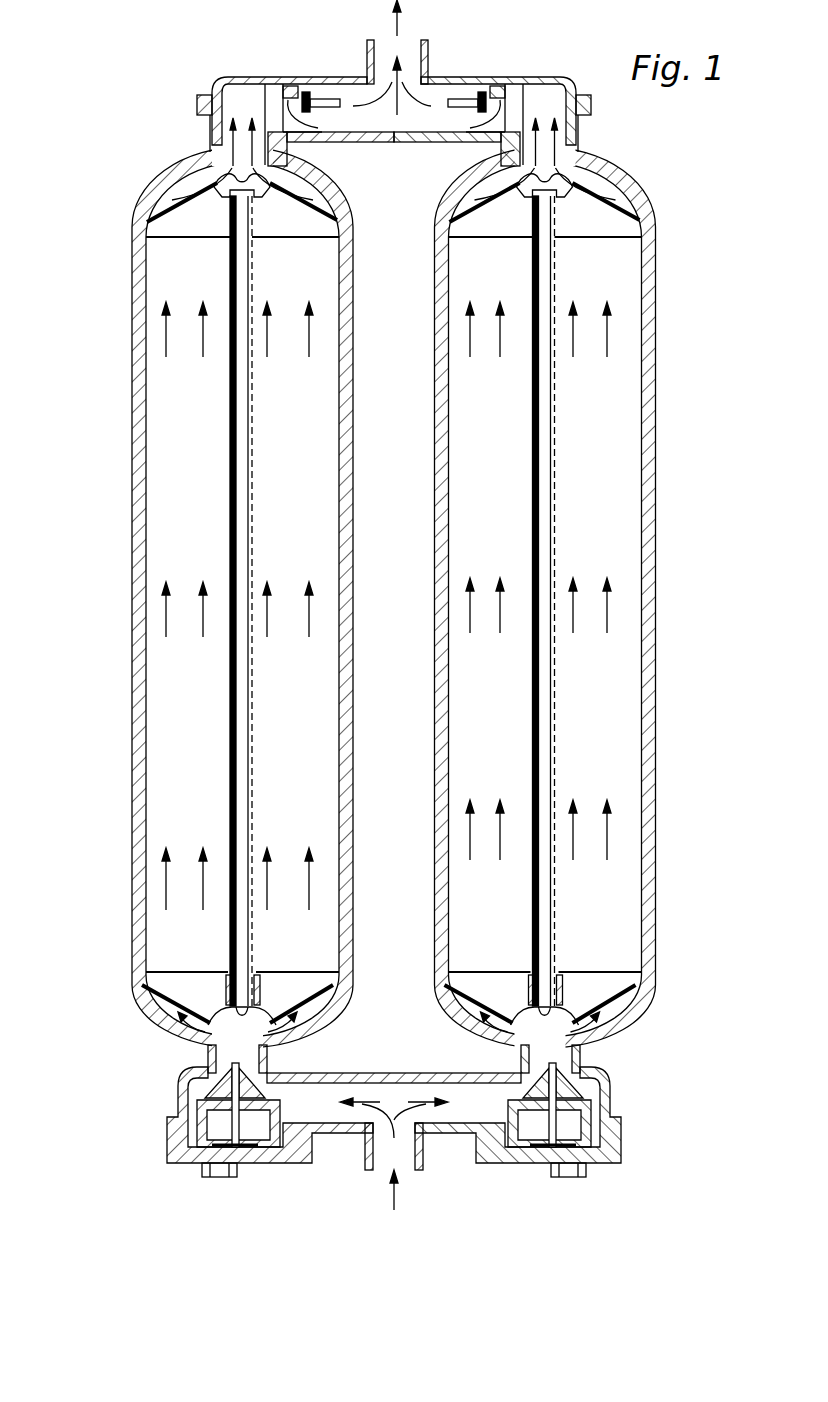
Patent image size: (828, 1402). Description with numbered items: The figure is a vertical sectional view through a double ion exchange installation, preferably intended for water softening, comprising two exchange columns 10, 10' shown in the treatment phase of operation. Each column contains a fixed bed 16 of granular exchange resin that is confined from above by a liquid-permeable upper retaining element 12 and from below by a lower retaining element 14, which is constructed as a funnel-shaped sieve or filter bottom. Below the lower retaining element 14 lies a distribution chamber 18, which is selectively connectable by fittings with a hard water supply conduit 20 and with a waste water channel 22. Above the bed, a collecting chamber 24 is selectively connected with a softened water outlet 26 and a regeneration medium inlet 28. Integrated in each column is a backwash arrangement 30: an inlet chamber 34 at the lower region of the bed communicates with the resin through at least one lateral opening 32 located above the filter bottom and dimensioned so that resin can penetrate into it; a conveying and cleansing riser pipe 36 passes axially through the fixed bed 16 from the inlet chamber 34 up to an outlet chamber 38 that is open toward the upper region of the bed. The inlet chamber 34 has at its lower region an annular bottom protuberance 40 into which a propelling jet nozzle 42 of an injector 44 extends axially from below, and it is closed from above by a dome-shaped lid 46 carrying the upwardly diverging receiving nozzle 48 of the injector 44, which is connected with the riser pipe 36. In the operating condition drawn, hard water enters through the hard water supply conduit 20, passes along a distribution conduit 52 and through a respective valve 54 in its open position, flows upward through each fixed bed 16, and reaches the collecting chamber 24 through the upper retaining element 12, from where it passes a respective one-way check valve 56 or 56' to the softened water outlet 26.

The exchange column 10 is at (206, 595).
The exchange column 10' is at (578, 585).
The upper retaining element 12 is at (186, 195).
The lower retaining element 14 is at (165, 975).
The fixed bed 16 is at (175, 782).
The distribution chamber 18 is at (163, 1015).
The hard water supply conduit 20 is at (389, 1158).
The waste water channel 22 is at (213, 1170).
The collecting chamber 24 is at (182, 185).
The softened water outlet 26 is at (414, 38).
The regeneration medium inlet 28 is at (202, 97).
The backwash arrangement 30 is at (230, 675).
The lateral opening 32 is at (260, 1008).
The inlet chamber 34 is at (227, 1008).
The riser pipe 36 is at (253, 787).
The outlet chamber 38 is at (258, 190).
The bottom protuberance 40 is at (283, 1043).
The propelling jet nozzle 42 is at (198, 1040).
The injector 44 is at (227, 1006).
The dome-shaped lid 46 is at (268, 1014).
The receiving nozzle 48 is at (256, 1012).
The distribution conduit 52 is at (325, 1115).
The valve 54 is at (183, 1103).
The check valve 56 is at (311, 74).
The check valve 56' is at (499, 73).